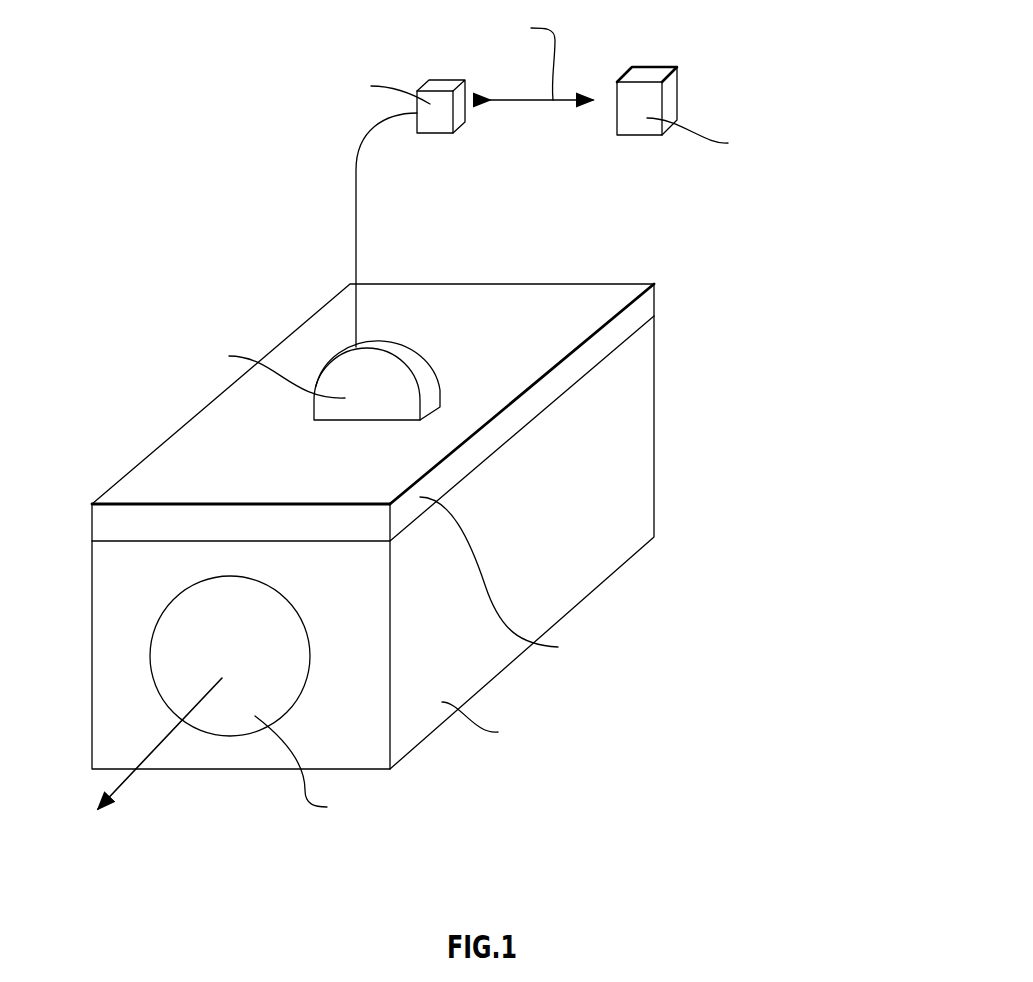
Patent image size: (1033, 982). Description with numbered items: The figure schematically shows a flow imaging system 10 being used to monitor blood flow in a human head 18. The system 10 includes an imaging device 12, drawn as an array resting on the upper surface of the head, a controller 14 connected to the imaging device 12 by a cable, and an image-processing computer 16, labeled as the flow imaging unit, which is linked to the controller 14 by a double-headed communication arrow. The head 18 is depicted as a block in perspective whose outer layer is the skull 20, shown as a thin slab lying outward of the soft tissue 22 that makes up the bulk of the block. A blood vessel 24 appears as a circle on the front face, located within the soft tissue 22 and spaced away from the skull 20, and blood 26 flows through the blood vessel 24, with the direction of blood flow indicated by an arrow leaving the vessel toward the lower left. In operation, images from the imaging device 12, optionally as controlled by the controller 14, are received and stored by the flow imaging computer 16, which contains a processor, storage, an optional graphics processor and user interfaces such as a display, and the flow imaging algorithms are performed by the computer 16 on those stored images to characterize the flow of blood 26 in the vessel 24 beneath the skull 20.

The flow imaging system 10 is at (772, 45).
The imaging device 12 is at (412, 358).
The controller 14 is at (438, 130).
The image-processing computer 16 is at (656, 68).
The human head 18 is at (408, 579).
The skull 20 is at (654, 302).
The soft tissue 22 is at (654, 423).
The blood vessel 24 is at (165, 607).
The blood 26 is at (246, 649).